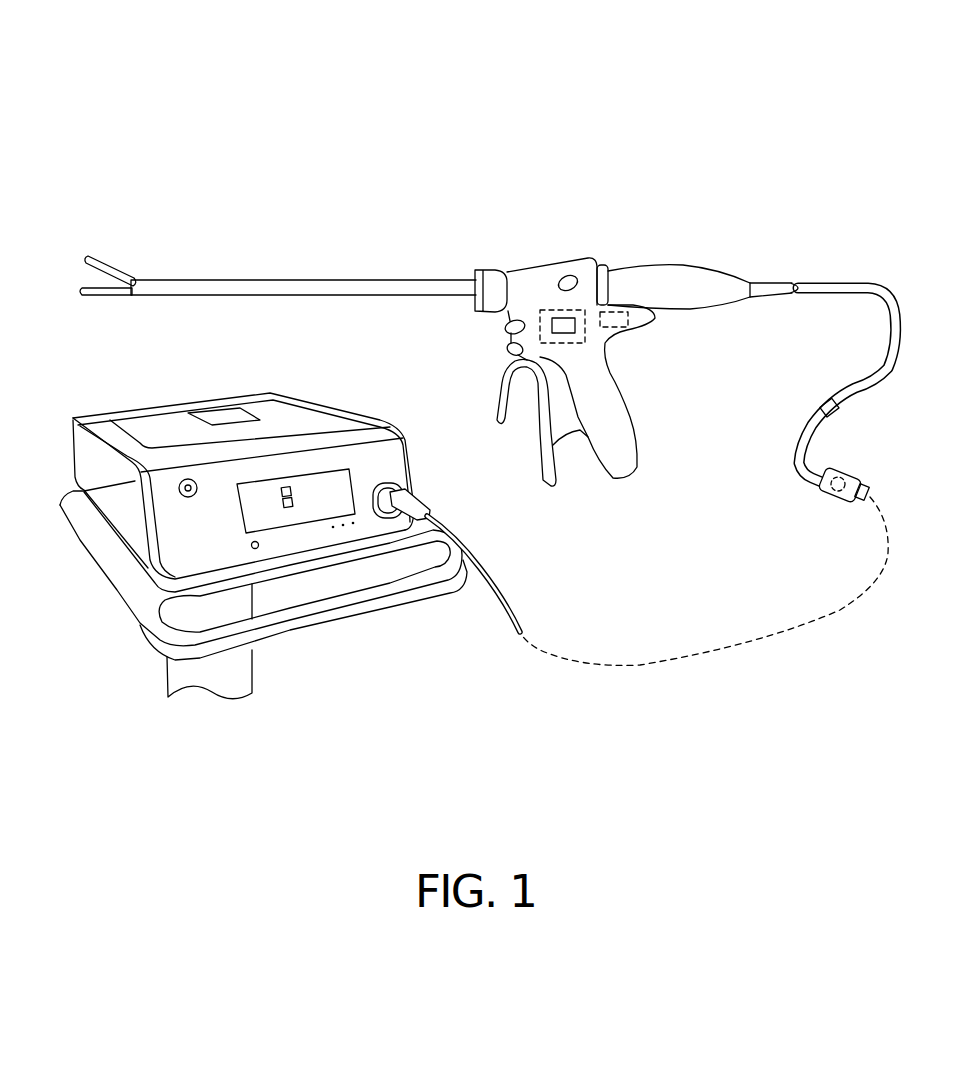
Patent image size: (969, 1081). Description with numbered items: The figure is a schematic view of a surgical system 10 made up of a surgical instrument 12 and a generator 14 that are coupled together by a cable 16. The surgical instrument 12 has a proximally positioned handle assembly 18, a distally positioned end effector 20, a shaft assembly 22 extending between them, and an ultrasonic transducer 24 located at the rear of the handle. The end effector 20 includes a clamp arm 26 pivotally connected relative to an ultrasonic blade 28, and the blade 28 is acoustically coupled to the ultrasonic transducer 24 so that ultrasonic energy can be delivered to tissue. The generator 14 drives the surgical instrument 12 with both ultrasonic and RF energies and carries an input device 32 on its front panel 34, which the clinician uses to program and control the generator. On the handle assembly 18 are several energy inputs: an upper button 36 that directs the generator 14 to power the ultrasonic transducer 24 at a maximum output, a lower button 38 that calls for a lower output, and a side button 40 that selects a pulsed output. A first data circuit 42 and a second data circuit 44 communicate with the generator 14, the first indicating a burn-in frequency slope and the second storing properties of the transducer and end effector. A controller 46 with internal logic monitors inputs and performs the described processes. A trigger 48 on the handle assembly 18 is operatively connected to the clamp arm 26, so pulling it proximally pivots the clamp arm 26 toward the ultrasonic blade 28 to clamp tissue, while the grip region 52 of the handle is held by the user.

The surgical system 10 is at (207, 54).
The surgical instrument 12 is at (881, 240).
The generator 14 is at (50, 422).
The cable 16 is at (519, 611).
The handle assembly 18 is at (550, 260).
The end effector 20 is at (109, 257).
The shaft assembly 22 is at (278, 267).
The ultrasonic transducer 24 is at (693, 265).
The clamp arm 26 is at (116, 268).
The ultrasonic blade 28 is at (96, 297).
The input device 32 is at (297, 495).
The front panel 34 is at (373, 450).
The upper button 36 is at (505, 328).
The lower button 38 is at (507, 349).
The side button 40 is at (574, 278).
The first data circuit 42 is at (828, 401).
The second data circuit 44 is at (611, 337).
The controller 46 is at (548, 308).
The trigger 48 is at (493, 425).
The handle 52 is at (593, 375).